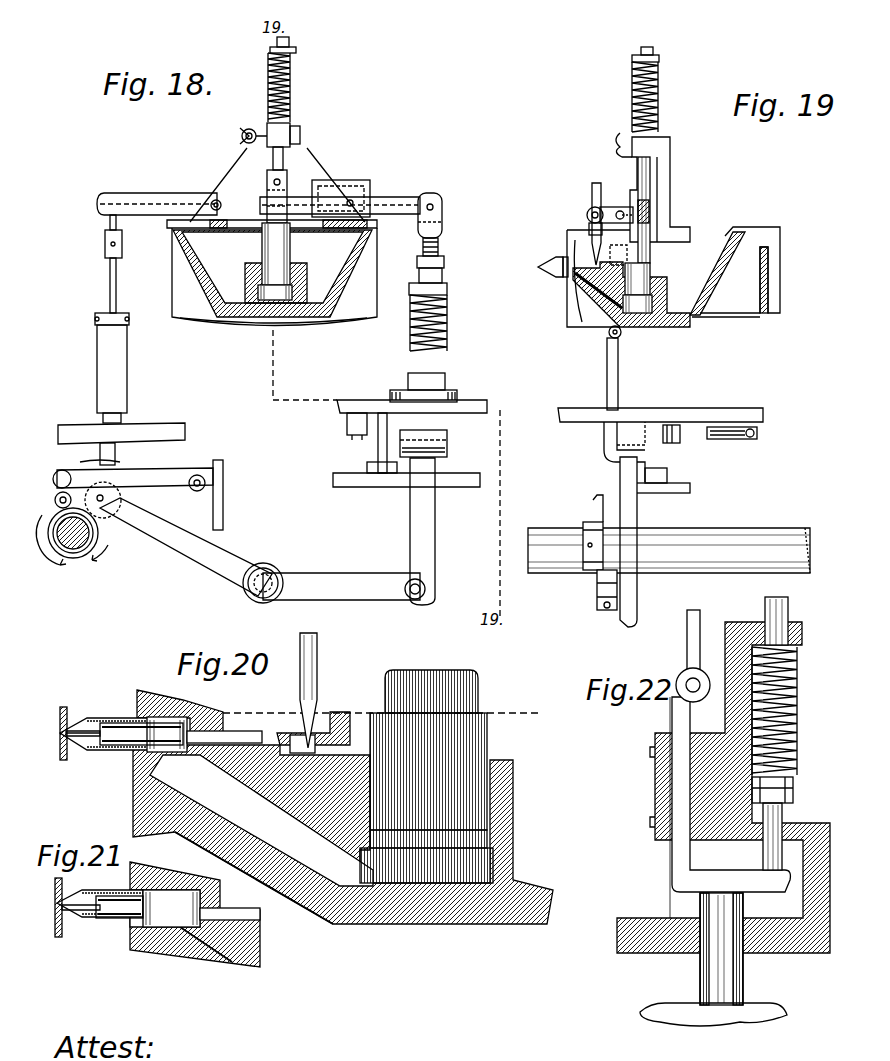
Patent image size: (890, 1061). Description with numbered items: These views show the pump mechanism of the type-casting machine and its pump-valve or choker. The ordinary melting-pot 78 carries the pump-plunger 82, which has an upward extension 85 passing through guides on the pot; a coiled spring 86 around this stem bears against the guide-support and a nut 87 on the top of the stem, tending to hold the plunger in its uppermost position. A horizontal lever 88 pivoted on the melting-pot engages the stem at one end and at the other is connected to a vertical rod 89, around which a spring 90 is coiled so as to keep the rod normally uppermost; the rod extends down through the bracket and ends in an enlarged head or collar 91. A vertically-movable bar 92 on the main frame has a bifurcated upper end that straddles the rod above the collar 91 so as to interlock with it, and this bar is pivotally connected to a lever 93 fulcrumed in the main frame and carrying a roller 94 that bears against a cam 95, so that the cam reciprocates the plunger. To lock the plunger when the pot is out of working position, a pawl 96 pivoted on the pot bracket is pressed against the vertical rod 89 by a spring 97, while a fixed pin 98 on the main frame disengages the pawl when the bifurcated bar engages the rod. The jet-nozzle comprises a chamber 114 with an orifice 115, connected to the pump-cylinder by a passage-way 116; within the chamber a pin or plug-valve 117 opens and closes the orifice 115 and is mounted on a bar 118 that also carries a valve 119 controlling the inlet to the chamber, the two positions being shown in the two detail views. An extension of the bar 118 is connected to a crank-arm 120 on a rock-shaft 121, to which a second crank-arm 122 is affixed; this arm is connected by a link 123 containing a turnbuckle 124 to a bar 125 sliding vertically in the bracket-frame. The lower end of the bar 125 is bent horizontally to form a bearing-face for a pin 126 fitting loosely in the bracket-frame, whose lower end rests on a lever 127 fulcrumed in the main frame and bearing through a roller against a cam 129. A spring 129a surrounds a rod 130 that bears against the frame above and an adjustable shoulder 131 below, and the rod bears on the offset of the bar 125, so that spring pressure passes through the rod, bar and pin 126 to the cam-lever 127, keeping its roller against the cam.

In FIG. 18, the melting-pot 78 is at (272, 273).
In FIG. 19, the melting-pot 78 is at (673, 277).
In FIG. 18, the pump-plunger 82 is at (263, 264).
In FIG. 19, the pump-plunger 82 is at (652, 286).
In FIG. 20, the pump-plunger 82 is at (426, 776).
In FIG. 18, the upward extension 85 is at (284, 160).
In FIG. 19, the upward extension 85 is at (650, 172).
In FIG. 18, the coiled spring 86 is at (291, 92).
In FIG. 19, the coiled spring 86 is at (660, 104).
In FIG. 18, the nut 87 is at (296, 50).
In FIG. 19, the nut 87 is at (662, 61).
In FIG. 18, the horizontal lever 88 is at (392, 200).
In FIG. 19, the horizontal lever 88 is at (652, 213).
In FIG. 18, the vertical rod 89 is at (444, 257).
In FIG. 18, the spring 90 is at (448, 325).
In FIG. 18, the enlarged head or collar 91 is at (448, 447).
In FIG. 19, the enlarged head or collar 91 is at (612, 455).
In FIG. 18, the vertically-movable bar 92 is at (428, 539).
In FIG. 19, the vertically-movable bar 92 is at (640, 513).
In FIG. 18, the lever 93 is at (228, 561).
In FIG. 19, the lever 93 is at (607, 607).
In FIG. 18, the roller 94 is at (103, 520).
In FIG. 18, the cam 95 is at (73, 560).
In FIG. 19, the cam 95 is at (590, 570).
In FIG. 19, the pawl 96 is at (682, 438).
In FIG. 19, the spring 97 is at (752, 436).
In FIG. 19, the fixed pin 98 is at (665, 470).
In FIG. 19, the chamber 114 is at (546, 273).
In FIG. 20, the chamber 114 is at (77, 723).
In FIG. 21, the chamber 114 is at (72, 897).
In FIG. 20, the orifice 115 is at (60, 733).
In FIG. 21, the orifice 115 is at (57, 910).
In FIG. 19, the passage-way 116 is at (590, 312).
In FIG. 20, the passage-way 116 is at (280, 822).
In FIG. 21, the passage-way 116 is at (230, 960).
In FIG. 20, the pin or plug-valve 117 is at (90, 752).
In FIG. 21, the pin or plug-valve 117 is at (90, 914).
In FIG. 20, the bar 118 is at (123, 747).
In FIG. 21, the bar 118 is at (123, 920).
In FIG. 20, the valve 119 is at (220, 715).
In FIG. 21, the valve 119 is at (260, 930).
In FIG. 19, the crank-arm 120 is at (588, 245).
In FIG. 20, the crank-arm 120 is at (316, 674).
In FIG. 18, the rock-shaft 121 is at (214, 200).
In FIG. 19, the rock-shaft 121 is at (588, 209).
In FIG. 18, the second crank-arm 122 is at (118, 194).
In FIG. 19, the second crank-arm 122 is at (610, 206).
In FIG. 18, the link 123 is at (111, 288).
In FIG. 22, the link 123 is at (688, 631).
In FIG. 18, the turnbuckle 124 is at (107, 246).
In FIG. 18, the bar 125 is at (103, 360).
In FIG. 19, the bar 125 is at (619, 368).
In FIG. 22, the bar 125 is at (678, 718).
In FIG. 18, the pin 126 is at (117, 456).
In FIG. 22, the pin 126 is at (717, 972).
In FIG. 18, the lever 127 is at (175, 470).
In FIG. 22, the lever 127 is at (693, 1012).
In FIG. 18, the cam 129 is at (45, 555).
In FIG. 22, the spring 129a is at (797, 684).
In FIG. 22, the rod 130 is at (787, 622).
In FIG. 22, the adjustable shoulder 131 is at (793, 785).